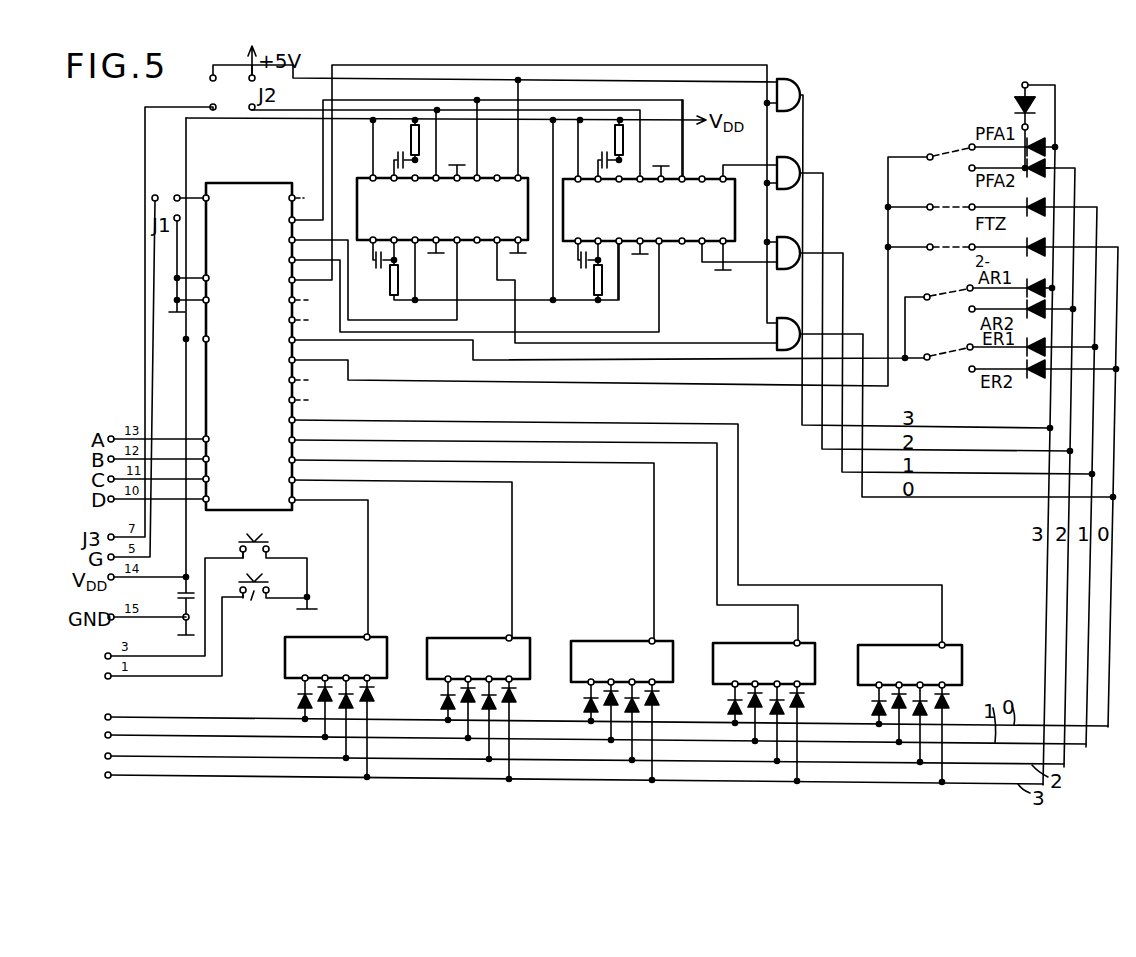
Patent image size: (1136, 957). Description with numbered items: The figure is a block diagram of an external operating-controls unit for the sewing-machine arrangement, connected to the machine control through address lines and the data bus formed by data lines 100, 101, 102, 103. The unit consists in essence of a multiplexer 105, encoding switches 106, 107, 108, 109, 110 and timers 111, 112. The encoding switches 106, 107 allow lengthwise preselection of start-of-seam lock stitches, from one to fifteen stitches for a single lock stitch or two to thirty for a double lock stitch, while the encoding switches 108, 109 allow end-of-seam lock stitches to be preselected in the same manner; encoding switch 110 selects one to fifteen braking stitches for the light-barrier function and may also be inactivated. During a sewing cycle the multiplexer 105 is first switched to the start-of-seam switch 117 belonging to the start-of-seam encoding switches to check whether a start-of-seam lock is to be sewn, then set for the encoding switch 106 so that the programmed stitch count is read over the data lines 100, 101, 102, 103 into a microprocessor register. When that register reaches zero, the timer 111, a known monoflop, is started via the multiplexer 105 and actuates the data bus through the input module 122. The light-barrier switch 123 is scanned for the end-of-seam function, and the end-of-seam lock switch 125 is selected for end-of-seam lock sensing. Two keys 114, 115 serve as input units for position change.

The data line 100 is at (166, 708).
The data line 101 is at (197, 735).
The data line 102 is at (237, 756).
The data line 103 is at (205, 777).
The multiplexer 105 is at (251, 186).
The encoding switch 106 is at (350, 637).
The encoding switch 107 is at (495, 638).
The encoding switch 108 is at (637, 641).
The encoding switch 109 is at (778, 643).
The encoding switch 110 is at (872, 645).
The timer 111 is at (477, 243).
The timer 112 is at (679, 243).
The key 114 is at (277, 543).
The key 115 is at (273, 600).
The switch 117 is at (950, 296).
The input module 122 is at (822, 133).
The switch 123 is at (950, 206).
The switch 125 is at (950, 355).